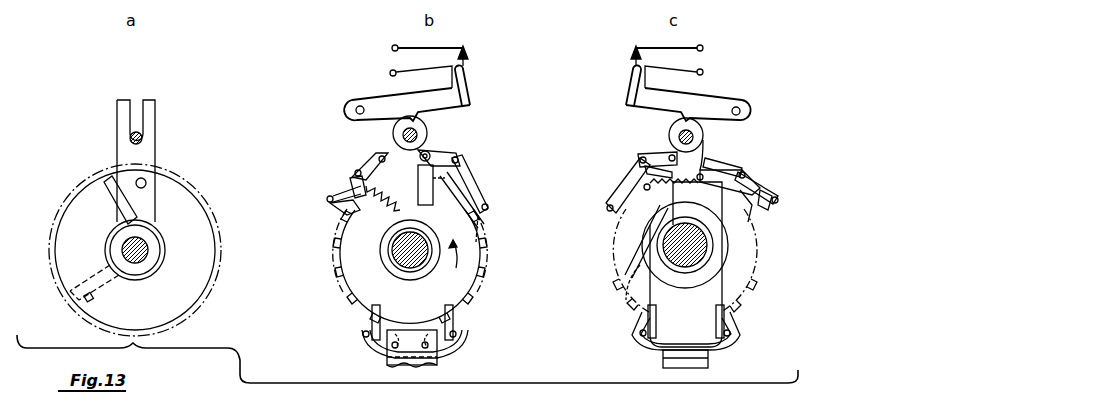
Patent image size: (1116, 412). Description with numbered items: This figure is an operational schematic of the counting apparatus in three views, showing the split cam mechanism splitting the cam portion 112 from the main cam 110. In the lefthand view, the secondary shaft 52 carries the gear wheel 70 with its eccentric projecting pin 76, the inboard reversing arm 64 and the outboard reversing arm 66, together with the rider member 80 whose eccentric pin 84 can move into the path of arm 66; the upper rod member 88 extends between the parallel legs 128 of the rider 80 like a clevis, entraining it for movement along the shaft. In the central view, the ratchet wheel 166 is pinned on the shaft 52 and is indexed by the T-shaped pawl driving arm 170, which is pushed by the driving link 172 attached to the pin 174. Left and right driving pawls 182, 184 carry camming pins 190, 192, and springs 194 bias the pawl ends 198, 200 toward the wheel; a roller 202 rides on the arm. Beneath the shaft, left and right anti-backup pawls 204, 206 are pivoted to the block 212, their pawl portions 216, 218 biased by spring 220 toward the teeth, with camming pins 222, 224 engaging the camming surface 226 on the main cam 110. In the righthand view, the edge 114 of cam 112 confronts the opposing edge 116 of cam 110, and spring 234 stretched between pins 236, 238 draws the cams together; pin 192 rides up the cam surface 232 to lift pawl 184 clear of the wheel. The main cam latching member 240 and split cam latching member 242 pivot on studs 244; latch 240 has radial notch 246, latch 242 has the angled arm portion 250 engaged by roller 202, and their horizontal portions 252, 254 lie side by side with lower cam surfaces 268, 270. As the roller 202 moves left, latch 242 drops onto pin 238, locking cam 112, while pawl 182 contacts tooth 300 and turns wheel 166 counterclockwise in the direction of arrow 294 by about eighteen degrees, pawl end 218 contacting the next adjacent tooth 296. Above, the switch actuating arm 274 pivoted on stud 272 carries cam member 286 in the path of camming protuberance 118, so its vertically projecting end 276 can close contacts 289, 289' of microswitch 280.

The secondary shaft 52 is at (150, 261).
The inboard reversing arm 64 is at (64, 280).
The outboard reversing arm 66 is at (104, 190).
The gear wheel 70 is at (56, 211).
The eccentric projecting pin 76 is at (84, 304).
The rider member 80 is at (126, 155).
The eccentric pin 84 is at (146, 181).
The upper rod member 88 is at (142, 138).
The main cam 110 is at (372, 322).
The split cam portion 112 is at (472, 222).
The edge of cam portion 112 114 is at (685, 274).
The opposing edge of cam 110 116 is at (676, 200).
The camming protuberance 118 is at (424, 128).
The parallel legs of the rider 128 is at (117, 109).
The ratchet wheel 166 is at (342, 276).
The pawl driving arm 170 is at (382, 250).
The driving link 172 is at (441, 197).
The pin 174 is at (395, 250).
The left driving pawl 182 is at (374, 156).
The right driving pawl 184 is at (455, 152).
The camming pin 190 is at (354, 172).
The camming pin 192 is at (459, 160).
The spring 194 is at (378, 200).
The left pawl end 198 is at (350, 186).
The right pawl end 200 is at (470, 176).
The roller 202 is at (430, 151).
The left anti-backup pawl 204 is at (372, 350).
The right anti-backup pawl 206 is at (450, 352).
The block 212 is at (425, 366).
The right pawl portion 216 is at (372, 322).
The left pawl portion 218 is at (453, 322).
The spring 220 is at (408, 340).
The right camming pin 222 is at (362, 337).
The left camming pin 224 is at (457, 336).
The camming surface 226 is at (706, 362).
The cam surface 232 is at (645, 170).
The spring 234 is at (632, 250).
The pin 236 is at (725, 170).
The pin 238 is at (640, 240).
The main cam latching member 240 is at (332, 208).
The split cam latching member 242 is at (489, 208).
The stud 244 is at (488, 212).
The radial notch 246 is at (769, 188).
The arm portion 250 is at (470, 188).
The horizontal portion 252 is at (712, 165).
The horizontal portion 254 is at (645, 185).
The lower cam surface 268 is at (655, 146).
The lower cam surface 270 is at (628, 280).
The stud 272 is at (356, 110).
The switch actuating arm 274 is at (396, 93).
The vertically projecting end 276 is at (465, 80).
The microswitch 280 is at (480, 53).
The cam member 286 is at (410, 117).
The switch contact 289 is at (555, 36).
The switch contact 289' is at (554, 33).
The arrow 294 is at (462, 262).
The next adjacent tooth 296 is at (470, 302).
The tooth 300 is at (345, 230).